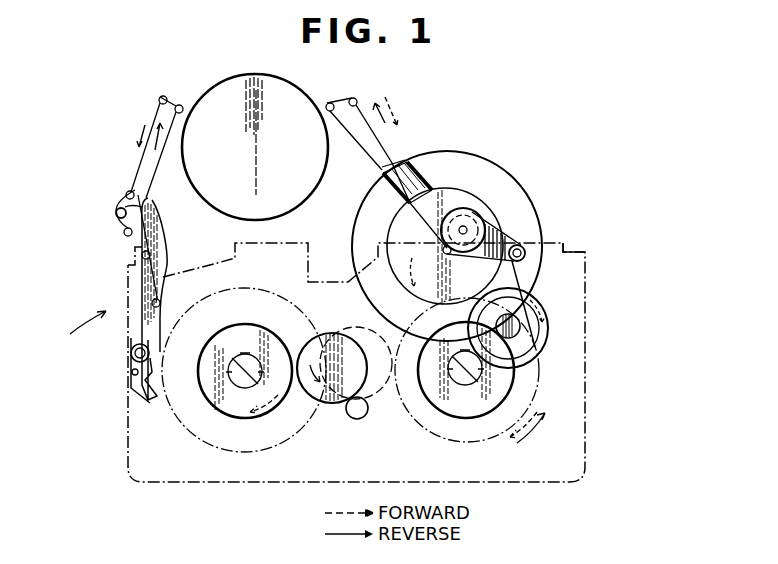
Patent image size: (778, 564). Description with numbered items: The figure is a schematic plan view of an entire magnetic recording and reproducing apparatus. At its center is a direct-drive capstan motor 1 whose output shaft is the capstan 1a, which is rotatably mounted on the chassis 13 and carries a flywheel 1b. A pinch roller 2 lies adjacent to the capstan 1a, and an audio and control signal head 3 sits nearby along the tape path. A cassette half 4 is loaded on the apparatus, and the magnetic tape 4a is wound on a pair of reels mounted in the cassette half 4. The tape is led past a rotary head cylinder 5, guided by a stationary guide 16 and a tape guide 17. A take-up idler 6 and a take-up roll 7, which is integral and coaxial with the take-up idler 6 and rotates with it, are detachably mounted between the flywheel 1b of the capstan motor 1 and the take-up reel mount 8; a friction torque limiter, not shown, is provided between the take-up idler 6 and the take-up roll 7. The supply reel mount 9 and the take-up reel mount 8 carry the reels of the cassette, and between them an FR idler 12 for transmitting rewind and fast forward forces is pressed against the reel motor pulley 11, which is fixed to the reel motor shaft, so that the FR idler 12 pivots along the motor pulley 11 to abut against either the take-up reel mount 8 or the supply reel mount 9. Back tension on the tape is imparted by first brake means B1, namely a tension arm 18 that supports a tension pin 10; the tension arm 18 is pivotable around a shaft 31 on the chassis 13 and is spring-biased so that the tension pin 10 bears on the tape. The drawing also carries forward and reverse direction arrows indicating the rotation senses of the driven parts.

The capstan motor 1 is at (356, 222).
The capstan 1a is at (451, 255).
The flywheel 1b is at (502, 215).
The pinch roller 2 is at (466, 208).
The audio and control signal head 3 is at (425, 178).
The cassette half 4 is at (580, 302).
The magnetic tape 4a is at (405, 160).
The rotary head cylinder 5 is at (301, 74).
The take-up idler 6 is at (549, 334).
The take-up roll 7 is at (528, 358).
The take-up reel mount 8 is at (457, 420).
The supply reel mount 9 is at (230, 420).
The tension pin 10 is at (127, 213).
The reel motor pulley 11 is at (362, 418).
The FR idler 12 is at (314, 401).
The chassis 13 is at (566, 251).
The stationary guide 16 is at (125, 236).
The tape guide 17 is at (126, 195).
The tension arm 18 is at (128, 342).
The shaft 31 is at (127, 362).
The first brake means B1 is at (70, 331).